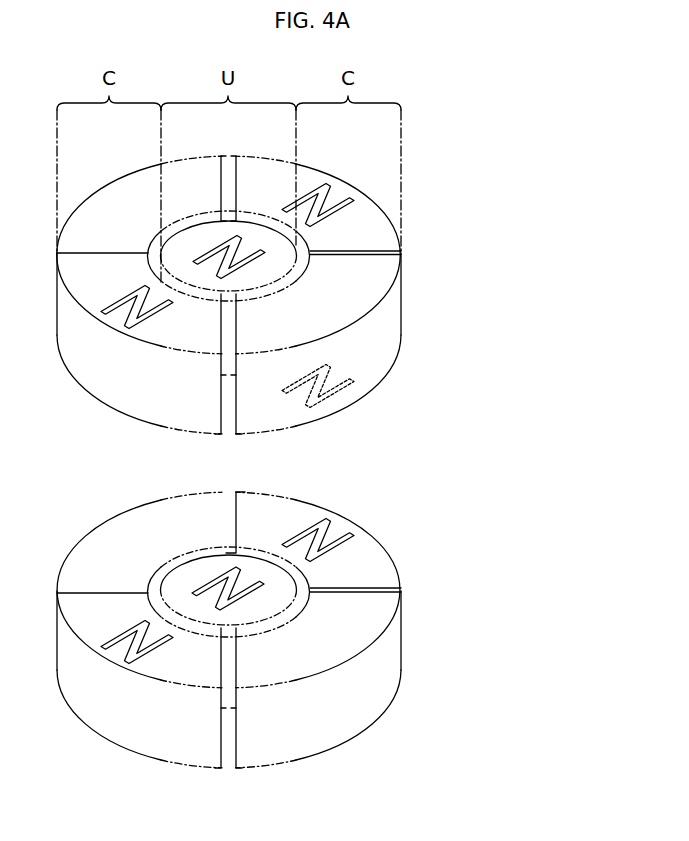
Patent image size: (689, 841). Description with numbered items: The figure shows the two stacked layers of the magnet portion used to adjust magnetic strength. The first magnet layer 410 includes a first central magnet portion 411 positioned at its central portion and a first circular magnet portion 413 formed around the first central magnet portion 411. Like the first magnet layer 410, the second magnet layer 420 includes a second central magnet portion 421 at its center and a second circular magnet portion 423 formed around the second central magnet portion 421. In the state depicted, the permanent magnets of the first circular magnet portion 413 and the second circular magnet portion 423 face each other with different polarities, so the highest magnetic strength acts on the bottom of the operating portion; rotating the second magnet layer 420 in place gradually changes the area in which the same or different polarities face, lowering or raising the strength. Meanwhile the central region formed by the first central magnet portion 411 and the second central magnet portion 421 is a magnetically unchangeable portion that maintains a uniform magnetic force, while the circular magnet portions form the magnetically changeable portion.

The first magnet layer 410 is at (309, 628).
The first central magnet portion 411 is at (300, 578).
The first circular magnet portion 413 is at (358, 627).
The second magnet layer 420 is at (309, 293).
The second central magnet portion 421 is at (277, 238).
The second circular magnet portion 423 is at (373, 340).